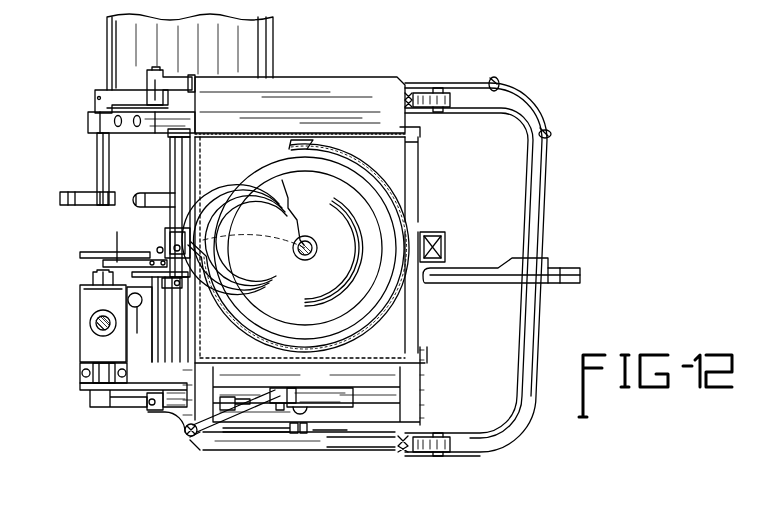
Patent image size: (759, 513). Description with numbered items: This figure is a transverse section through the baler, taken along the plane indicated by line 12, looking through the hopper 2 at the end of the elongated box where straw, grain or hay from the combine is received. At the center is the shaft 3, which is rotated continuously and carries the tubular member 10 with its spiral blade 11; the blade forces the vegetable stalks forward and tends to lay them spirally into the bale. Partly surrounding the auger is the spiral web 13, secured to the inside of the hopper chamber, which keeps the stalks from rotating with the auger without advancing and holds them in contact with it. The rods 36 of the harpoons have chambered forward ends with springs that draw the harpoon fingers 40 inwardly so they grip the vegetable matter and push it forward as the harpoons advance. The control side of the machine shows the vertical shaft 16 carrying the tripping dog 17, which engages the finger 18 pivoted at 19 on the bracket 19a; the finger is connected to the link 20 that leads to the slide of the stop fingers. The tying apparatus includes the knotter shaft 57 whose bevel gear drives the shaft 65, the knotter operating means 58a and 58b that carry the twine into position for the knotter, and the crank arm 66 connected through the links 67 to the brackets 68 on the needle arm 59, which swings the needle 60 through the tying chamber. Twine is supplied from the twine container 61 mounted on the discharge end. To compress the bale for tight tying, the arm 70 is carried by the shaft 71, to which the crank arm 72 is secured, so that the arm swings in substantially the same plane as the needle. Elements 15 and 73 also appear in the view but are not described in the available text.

The hopper 2 is at (363, 92).
The shaft 3 is at (317, 248).
The tubular member 10 is at (298, 257).
The spiral blade 11 is at (272, 243).
The section line 12 is at (218, 247).
The spiral web 13 is at (202, 228).
The post 15 is at (120, 237).
The shaft 16 is at (153, 343).
The tripping dog 17 is at (173, 410).
The finger 18 is at (243, 418).
The pivot 19 is at (305, 412).
The bracket 19a is at (335, 402).
The link 20 is at (190, 437).
The rods 36 is at (445, 250).
The harpoon fingers 40 is at (445, 240).
The knotter shaft 57 is at (80, 327).
The knotter operating means 58a is at (78, 205).
The knotter operating means 58b is at (135, 198).
The needle arm 59 is at (522, 315).
The needle 60 is at (458, 285).
The twine container 61 is at (190, 52).
The shaft 65 is at (95, 156).
The crank arm 66 is at (128, 98).
The links 67 is at (177, 78).
The brackets 68 is at (462, 102).
The arm 70 is at (92, 252).
The shaft 71 is at (170, 150).
The crank arm 72 is at (170, 302).
The roller 73 is at (142, 324).